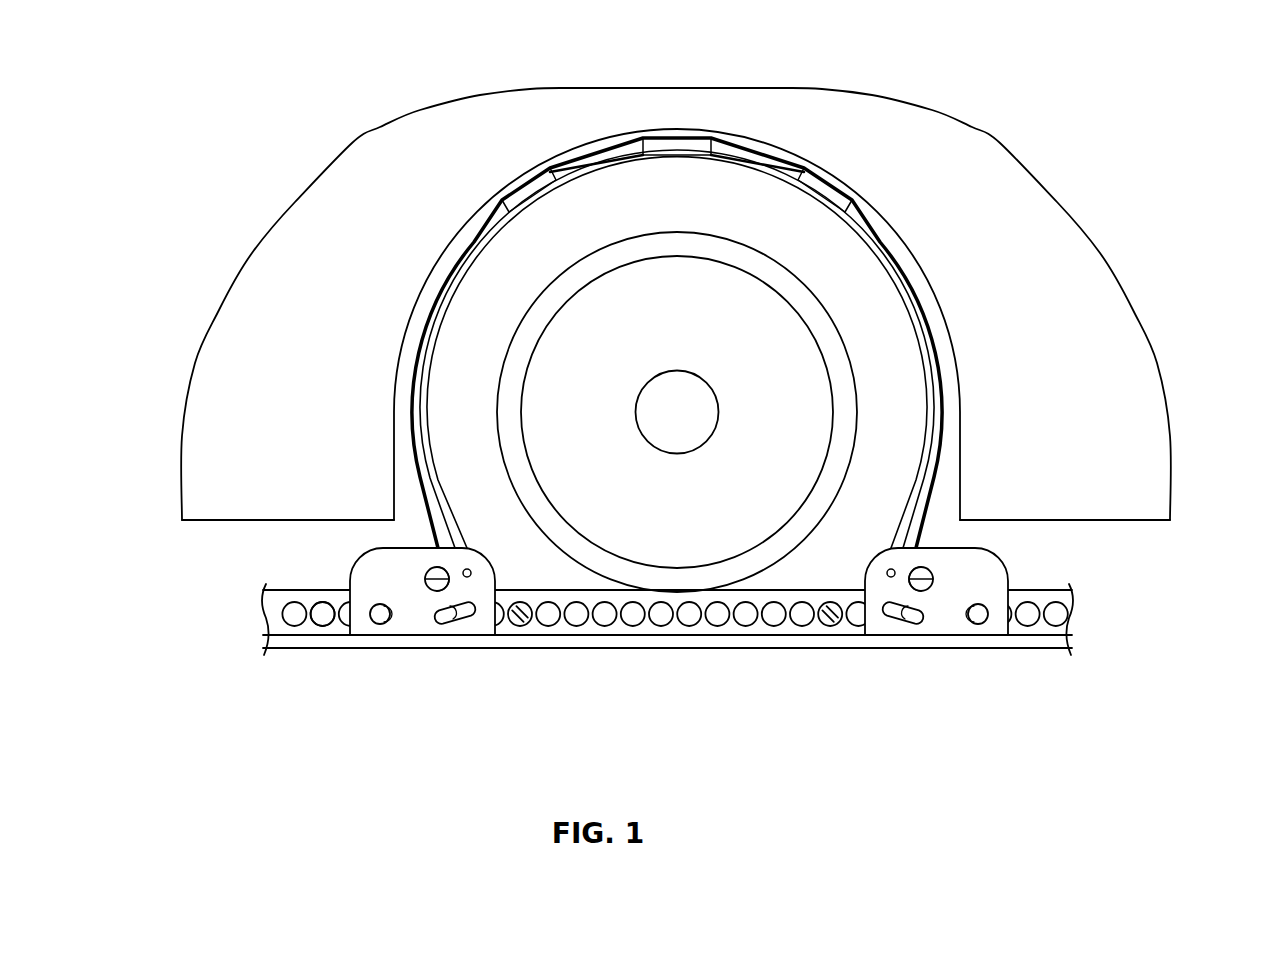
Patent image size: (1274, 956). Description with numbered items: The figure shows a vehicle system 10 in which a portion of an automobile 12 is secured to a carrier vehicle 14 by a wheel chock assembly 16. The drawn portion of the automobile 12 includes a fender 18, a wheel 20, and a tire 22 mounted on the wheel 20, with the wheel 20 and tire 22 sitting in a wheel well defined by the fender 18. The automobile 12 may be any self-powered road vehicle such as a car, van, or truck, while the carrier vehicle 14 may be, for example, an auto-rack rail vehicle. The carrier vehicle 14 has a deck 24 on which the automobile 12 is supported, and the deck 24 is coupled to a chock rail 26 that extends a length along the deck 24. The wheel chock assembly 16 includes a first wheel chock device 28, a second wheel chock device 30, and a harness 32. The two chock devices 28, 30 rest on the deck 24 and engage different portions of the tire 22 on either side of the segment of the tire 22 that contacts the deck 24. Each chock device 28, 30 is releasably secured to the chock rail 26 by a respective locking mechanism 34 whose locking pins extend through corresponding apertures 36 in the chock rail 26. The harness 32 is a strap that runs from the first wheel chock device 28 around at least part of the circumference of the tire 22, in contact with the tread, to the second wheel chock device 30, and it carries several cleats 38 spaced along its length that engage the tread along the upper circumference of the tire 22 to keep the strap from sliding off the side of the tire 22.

The vehicle system 10 is at (1200, 195).
The automobile 12 is at (917, 104).
The carrier vehicle 14 is at (664, 669).
The wheel chock assembly 16 is at (645, 647).
The fender 18 is at (435, 130).
The wheel 20 is at (662, 336).
The tire 22 is at (665, 212).
The deck 24 is at (655, 645).
The chock rail 26 is at (685, 625).
The first wheel chock device 28 is at (415, 622).
The second wheel chock device 30 is at (928, 622).
The harness 32 is at (625, 145).
The locking mechanism 34 is at (378, 622).
The apertures 36 is at (318, 617).
The cleats 38 is at (527, 190).